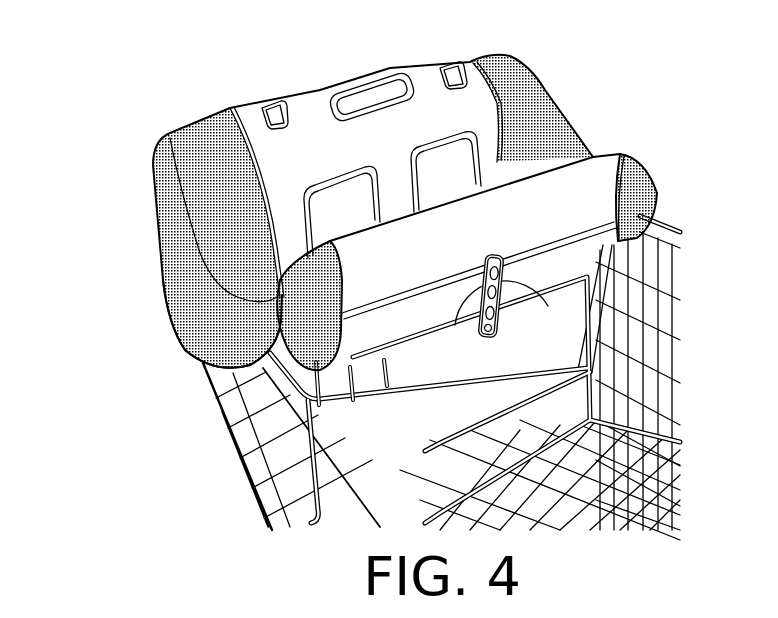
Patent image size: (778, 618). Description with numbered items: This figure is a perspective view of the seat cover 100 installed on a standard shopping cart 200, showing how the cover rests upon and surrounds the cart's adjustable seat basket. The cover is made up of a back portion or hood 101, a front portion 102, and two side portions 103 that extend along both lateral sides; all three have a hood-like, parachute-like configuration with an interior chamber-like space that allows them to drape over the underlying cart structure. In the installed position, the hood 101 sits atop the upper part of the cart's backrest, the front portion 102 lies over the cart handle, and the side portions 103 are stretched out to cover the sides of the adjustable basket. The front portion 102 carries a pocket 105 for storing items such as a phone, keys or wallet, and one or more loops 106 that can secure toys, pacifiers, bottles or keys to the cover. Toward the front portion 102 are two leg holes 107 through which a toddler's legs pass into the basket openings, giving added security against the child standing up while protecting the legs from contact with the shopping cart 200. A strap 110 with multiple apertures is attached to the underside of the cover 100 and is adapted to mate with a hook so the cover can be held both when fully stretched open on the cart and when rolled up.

The seat cover 100 is at (98, 176).
The hood 101 is at (640, 185).
The front portion 102 is at (208, 123).
The side portions 103 is at (207, 340).
The pocket 105 is at (400, 110).
The loops 106 is at (440, 67).
The leg holes 107 is at (432, 183).
The strap 110 is at (503, 260).
The shopping cart 200 is at (243, 423).